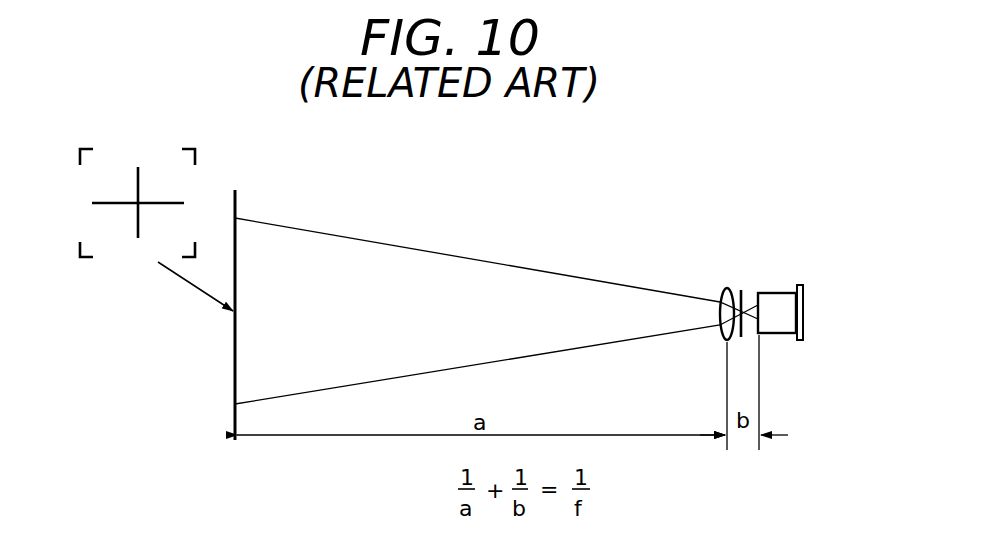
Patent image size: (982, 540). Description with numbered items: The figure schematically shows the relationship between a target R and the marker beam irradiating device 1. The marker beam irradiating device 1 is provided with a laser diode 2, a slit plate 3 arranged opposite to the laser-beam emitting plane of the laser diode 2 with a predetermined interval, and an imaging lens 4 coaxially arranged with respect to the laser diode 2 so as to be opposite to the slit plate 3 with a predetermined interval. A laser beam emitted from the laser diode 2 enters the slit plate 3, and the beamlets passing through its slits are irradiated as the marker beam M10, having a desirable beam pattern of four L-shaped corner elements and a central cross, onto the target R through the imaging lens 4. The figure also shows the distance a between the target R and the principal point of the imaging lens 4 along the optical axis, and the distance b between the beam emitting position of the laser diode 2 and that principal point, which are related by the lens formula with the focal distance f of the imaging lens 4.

The marker beam M10 is at (197, 152).
The target R is at (237, 212).
The marker beam irradiating device 1 is at (742, 289).
The laser diode 2 is at (780, 336).
The slit plate 3 is at (745, 290).
The imaging lens 4 is at (720, 292).